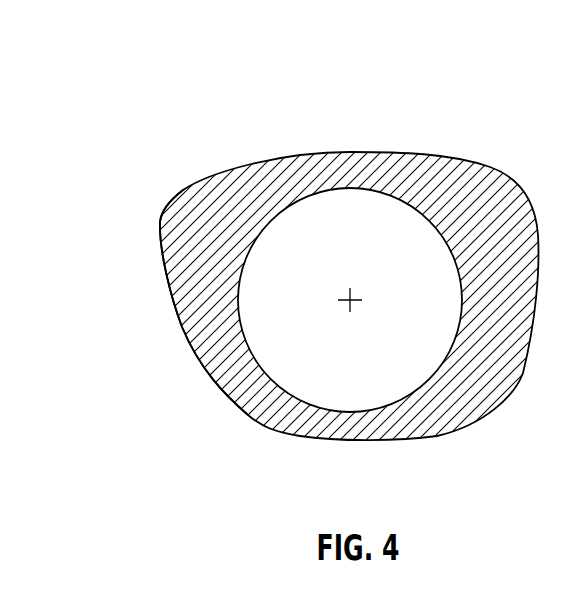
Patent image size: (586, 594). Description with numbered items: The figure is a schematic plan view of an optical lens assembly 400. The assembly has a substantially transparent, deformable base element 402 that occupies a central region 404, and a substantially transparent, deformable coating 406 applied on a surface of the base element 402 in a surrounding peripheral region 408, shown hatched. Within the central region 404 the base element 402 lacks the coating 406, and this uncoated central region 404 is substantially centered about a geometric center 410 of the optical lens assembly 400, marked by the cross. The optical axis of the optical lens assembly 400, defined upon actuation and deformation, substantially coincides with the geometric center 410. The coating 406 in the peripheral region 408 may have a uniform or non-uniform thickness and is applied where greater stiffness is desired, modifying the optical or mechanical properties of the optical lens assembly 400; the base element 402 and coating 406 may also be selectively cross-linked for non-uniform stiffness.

The optical lens assembly 400 is at (123, 78).
The base element 402 is at (340, 228).
The central region 404 is at (266, 312).
The coating 406 is at (183, 280).
The peripheral region 408 is at (254, 399).
The geometric center 410 is at (350, 298).